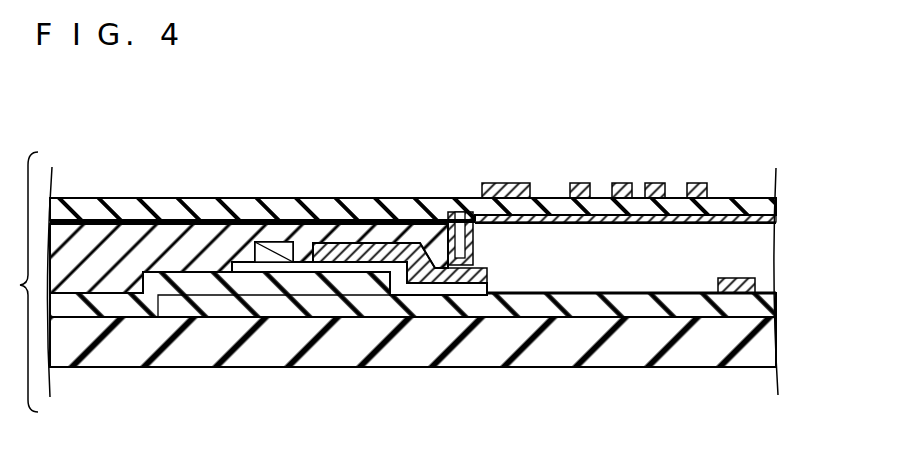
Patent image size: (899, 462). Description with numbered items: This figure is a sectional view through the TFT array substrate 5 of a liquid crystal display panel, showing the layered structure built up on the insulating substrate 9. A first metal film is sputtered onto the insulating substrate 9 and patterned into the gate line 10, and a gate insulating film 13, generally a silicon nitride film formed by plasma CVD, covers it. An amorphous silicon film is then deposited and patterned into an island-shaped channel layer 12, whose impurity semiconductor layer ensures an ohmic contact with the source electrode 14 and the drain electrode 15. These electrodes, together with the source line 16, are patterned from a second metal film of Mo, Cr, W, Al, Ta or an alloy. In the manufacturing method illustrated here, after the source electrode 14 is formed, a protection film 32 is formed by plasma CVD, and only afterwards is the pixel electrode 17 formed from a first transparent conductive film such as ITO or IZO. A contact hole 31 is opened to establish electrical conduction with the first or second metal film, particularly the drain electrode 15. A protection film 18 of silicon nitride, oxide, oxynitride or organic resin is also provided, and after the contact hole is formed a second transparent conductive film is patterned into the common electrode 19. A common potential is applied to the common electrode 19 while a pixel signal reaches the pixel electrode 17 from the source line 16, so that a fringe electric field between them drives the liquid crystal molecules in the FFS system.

The TFT array substrate 5 is at (389, 282).
The insulating substrate 9 is at (113, 347).
The gate line 10 is at (248, 308).
The channel layer 12 is at (238, 264).
The gate insulating film 13 is at (347, 288).
The source electrode 14 is at (283, 252).
The drain electrode 15 is at (402, 252).
The source line 16 is at (728, 287).
The pixel electrode 17 is at (603, 206).
The protection film 18 is at (107, 203).
The common electrode 19 is at (657, 184).
The contact hole 31 is at (460, 252).
The protection film 32 is at (357, 232).